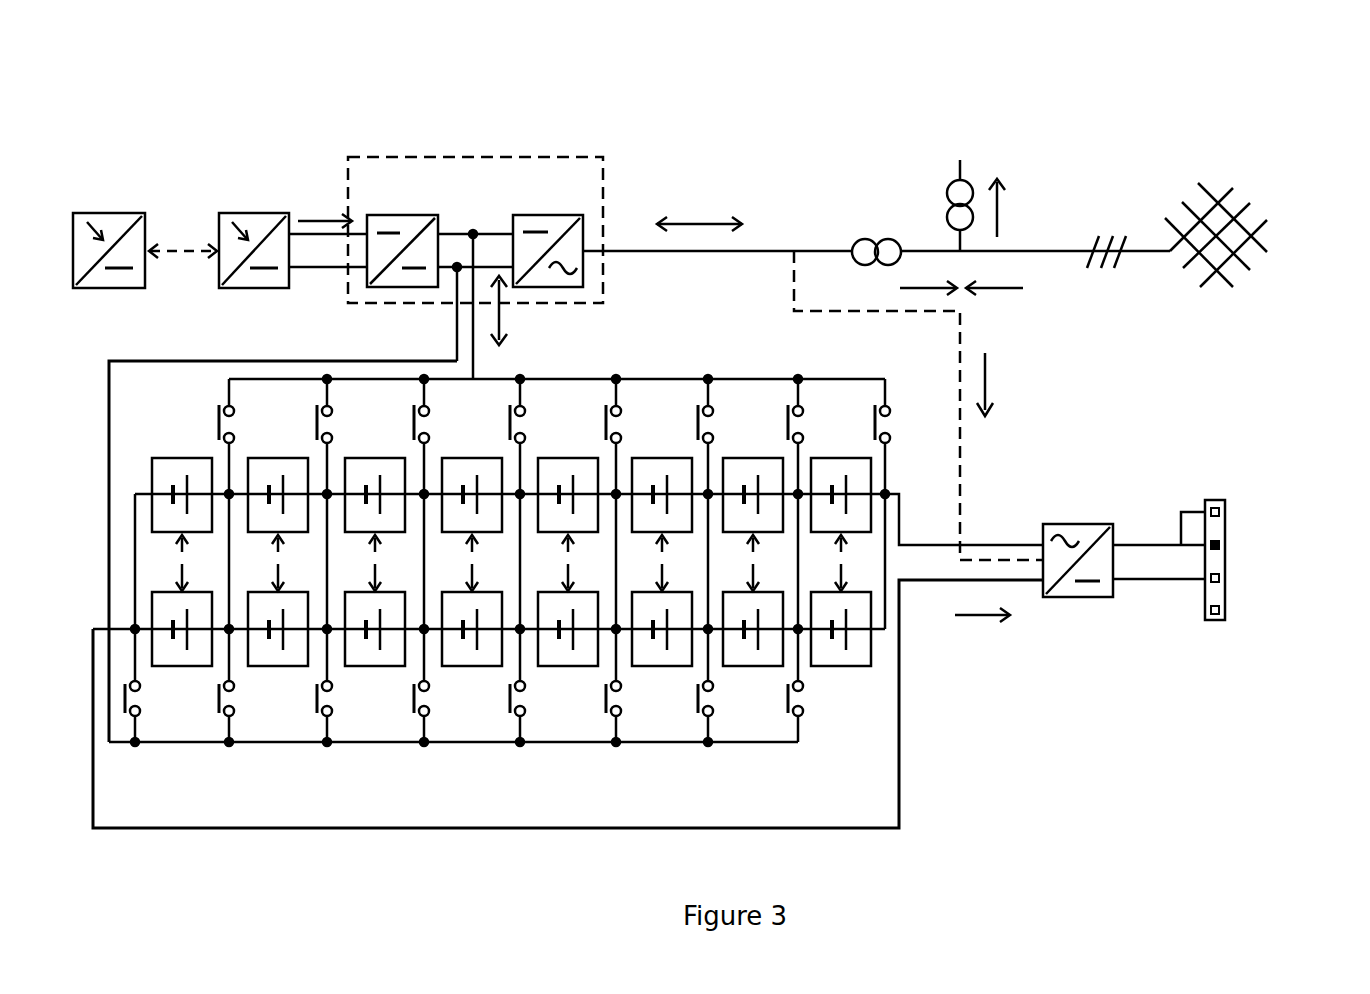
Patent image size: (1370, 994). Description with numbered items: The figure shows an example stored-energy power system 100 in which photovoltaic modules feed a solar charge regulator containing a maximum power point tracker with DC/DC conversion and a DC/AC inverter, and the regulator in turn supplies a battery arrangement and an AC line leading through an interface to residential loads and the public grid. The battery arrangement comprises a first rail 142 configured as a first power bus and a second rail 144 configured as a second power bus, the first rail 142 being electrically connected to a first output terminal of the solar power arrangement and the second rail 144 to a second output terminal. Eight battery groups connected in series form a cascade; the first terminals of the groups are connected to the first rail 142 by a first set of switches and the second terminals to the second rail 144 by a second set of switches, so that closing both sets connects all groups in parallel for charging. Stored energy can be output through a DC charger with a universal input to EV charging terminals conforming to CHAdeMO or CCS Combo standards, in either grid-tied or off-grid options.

The energy system 100 is at (128, 38).
The first rail 142 is at (632, 360).
The second rail 144 is at (543, 754).